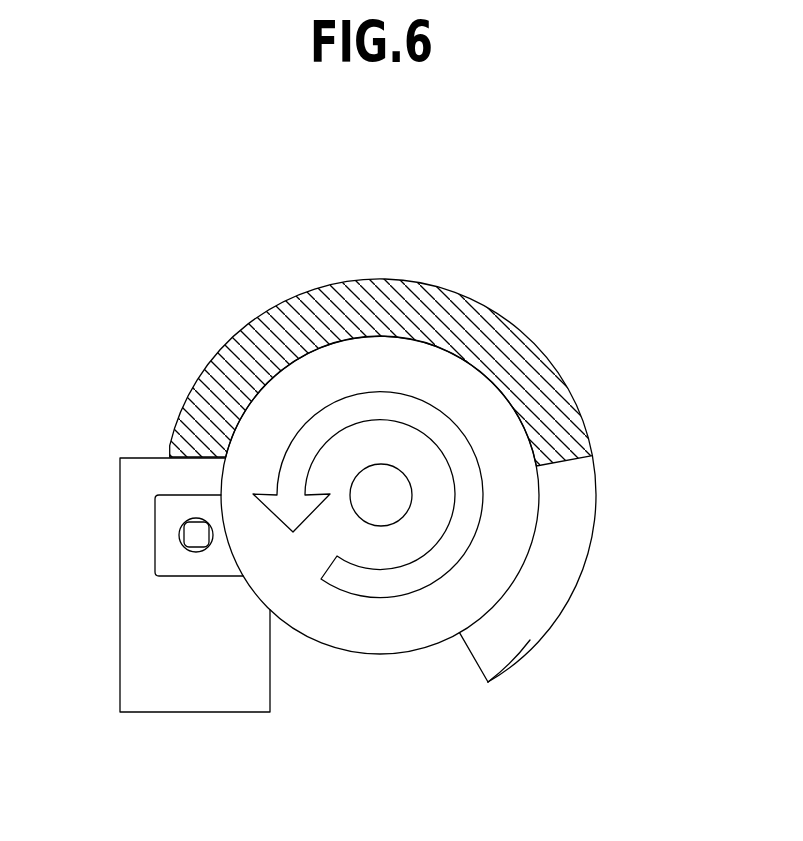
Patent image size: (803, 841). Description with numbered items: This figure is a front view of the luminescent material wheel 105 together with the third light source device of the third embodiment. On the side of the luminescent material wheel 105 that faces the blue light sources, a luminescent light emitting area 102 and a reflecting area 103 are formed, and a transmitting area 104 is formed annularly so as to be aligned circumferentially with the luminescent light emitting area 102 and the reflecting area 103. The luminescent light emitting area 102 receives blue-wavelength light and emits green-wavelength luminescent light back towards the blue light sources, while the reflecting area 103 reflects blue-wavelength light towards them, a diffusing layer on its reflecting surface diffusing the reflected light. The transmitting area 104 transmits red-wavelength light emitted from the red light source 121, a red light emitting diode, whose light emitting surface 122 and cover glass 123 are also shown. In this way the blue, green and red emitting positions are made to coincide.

The luminescent light emitting area 102 is at (500, 338).
The reflecting area 103 is at (572, 508).
The transmitting area 104 is at (455, 673).
The luminescent material wheel 105 is at (428, 269).
The red light source 121 is at (120, 566).
The light emitting surface 122 is at (194, 530).
The cover glass 123 is at (155, 512).